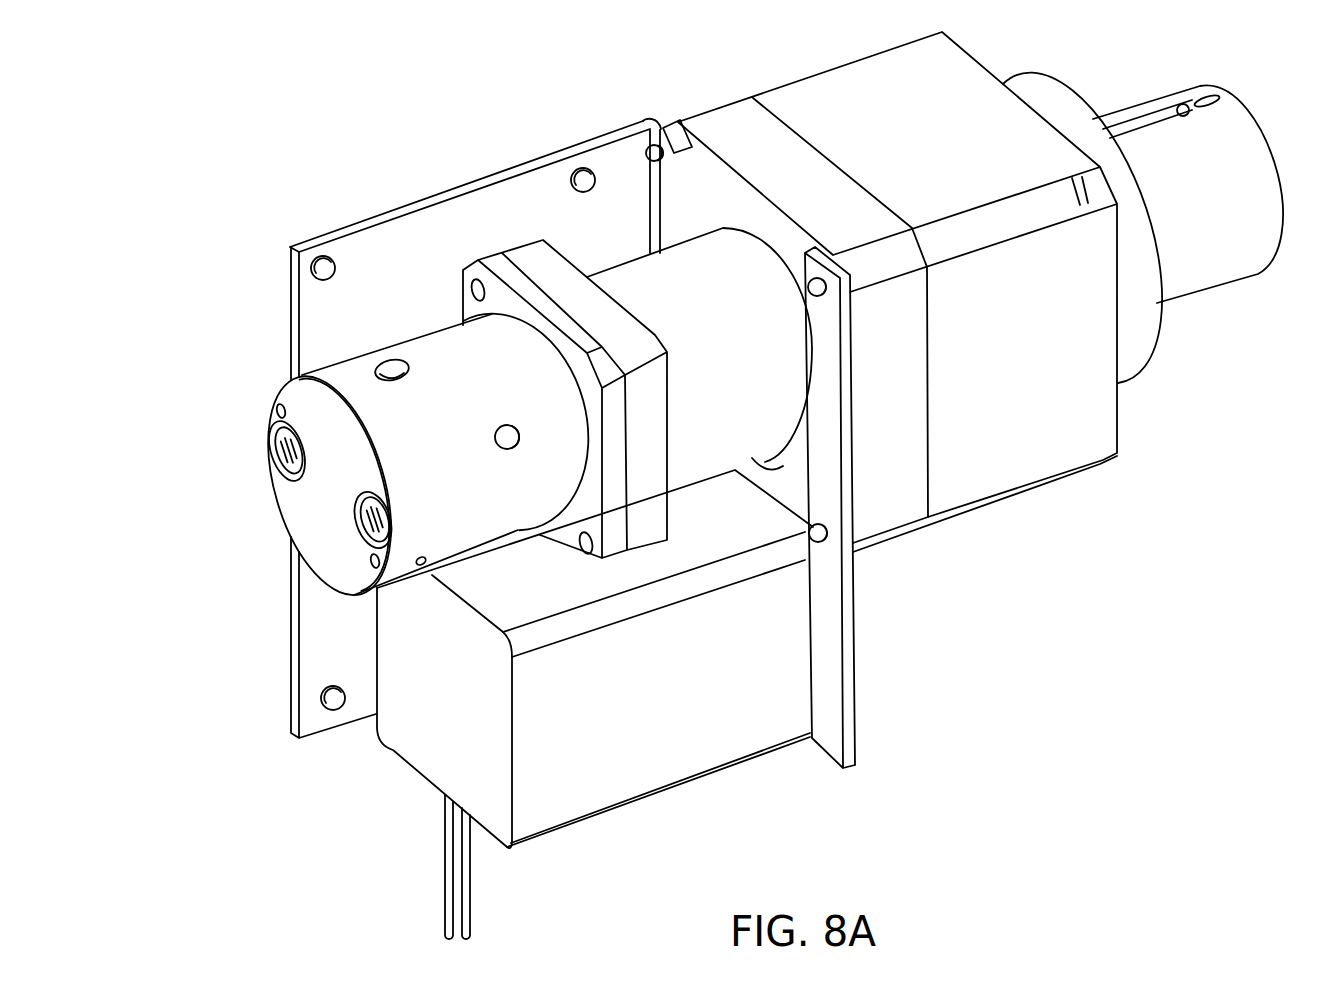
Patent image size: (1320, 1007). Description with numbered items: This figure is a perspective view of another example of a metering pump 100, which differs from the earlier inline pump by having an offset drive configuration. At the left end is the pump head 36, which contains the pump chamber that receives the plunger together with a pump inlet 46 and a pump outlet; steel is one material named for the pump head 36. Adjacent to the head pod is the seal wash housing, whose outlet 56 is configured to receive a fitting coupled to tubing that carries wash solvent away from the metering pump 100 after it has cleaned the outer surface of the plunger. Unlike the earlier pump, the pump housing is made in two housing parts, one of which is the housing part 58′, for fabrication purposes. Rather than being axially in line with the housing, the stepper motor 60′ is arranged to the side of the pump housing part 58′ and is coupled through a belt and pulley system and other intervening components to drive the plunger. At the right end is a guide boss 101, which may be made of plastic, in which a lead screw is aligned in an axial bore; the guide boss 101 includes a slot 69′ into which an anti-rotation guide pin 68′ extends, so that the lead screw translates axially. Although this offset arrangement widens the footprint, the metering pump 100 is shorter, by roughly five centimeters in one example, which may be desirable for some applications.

The metering pump 100 is at (250, 145).
The pump head 36 is at (290, 394).
The pump inlet 46 is at (396, 360).
The outlet 56 is at (499, 441).
The housing part 58′ is at (1012, 492).
The stepper motor 60′ is at (651, 792).
The anti-rotation guide pin 68′ is at (1185, 104).
The slot 69′ is at (1130, 118).
The guide boss 101 is at (1230, 272).